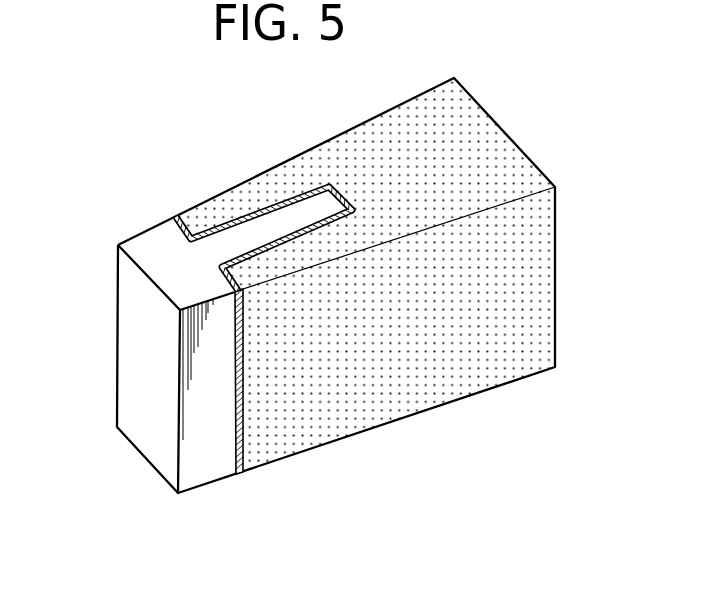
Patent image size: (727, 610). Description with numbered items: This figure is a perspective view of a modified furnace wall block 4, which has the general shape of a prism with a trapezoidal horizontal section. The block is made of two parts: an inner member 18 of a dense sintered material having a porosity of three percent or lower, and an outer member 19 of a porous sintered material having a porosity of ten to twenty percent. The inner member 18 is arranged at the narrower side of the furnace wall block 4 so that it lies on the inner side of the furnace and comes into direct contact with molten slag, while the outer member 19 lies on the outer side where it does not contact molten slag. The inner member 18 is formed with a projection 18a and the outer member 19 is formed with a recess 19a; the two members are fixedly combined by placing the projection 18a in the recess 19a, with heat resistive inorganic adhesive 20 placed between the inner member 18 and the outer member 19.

The furnace wall block 4 is at (502, 113).
The inner member 18 is at (140, 331).
The projection 18a is at (258, 230).
The outer member 19 is at (525, 313).
The recess 19a is at (296, 196).
The heat resistive inorganic adhesive 20 is at (243, 477).